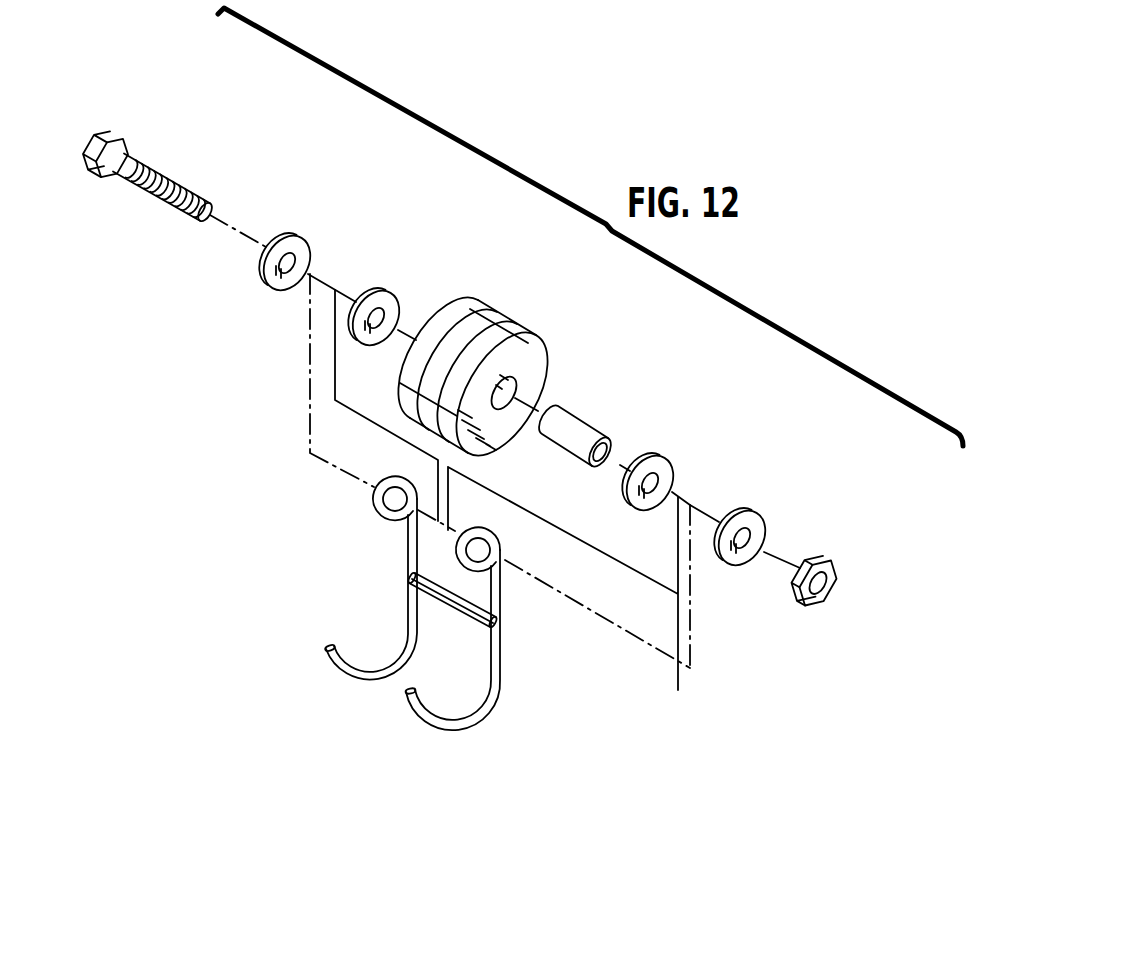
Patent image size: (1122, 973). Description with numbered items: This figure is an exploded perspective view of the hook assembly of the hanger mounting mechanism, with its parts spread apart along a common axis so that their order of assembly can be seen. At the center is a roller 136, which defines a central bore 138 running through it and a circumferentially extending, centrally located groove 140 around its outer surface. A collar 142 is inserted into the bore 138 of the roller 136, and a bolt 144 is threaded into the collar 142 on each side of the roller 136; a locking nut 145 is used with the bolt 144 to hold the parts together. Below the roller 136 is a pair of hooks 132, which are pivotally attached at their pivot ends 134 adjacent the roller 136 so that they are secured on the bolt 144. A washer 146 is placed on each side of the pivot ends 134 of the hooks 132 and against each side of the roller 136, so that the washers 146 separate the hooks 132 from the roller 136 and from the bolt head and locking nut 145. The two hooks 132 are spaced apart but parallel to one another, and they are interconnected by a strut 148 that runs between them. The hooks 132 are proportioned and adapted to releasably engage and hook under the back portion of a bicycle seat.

The hooks 132 is at (460, 720).
The pivot ends 134 is at (480, 549).
The roller 136 is at (458, 300).
The central bore 138 is at (512, 382).
The groove 140 is at (490, 310).
The collar 142 is at (587, 431).
The bolt 144 is at (150, 170).
The locking nut 145 is at (833, 567).
The washer 146 is at (380, 294).
The strut 148 is at (465, 608).